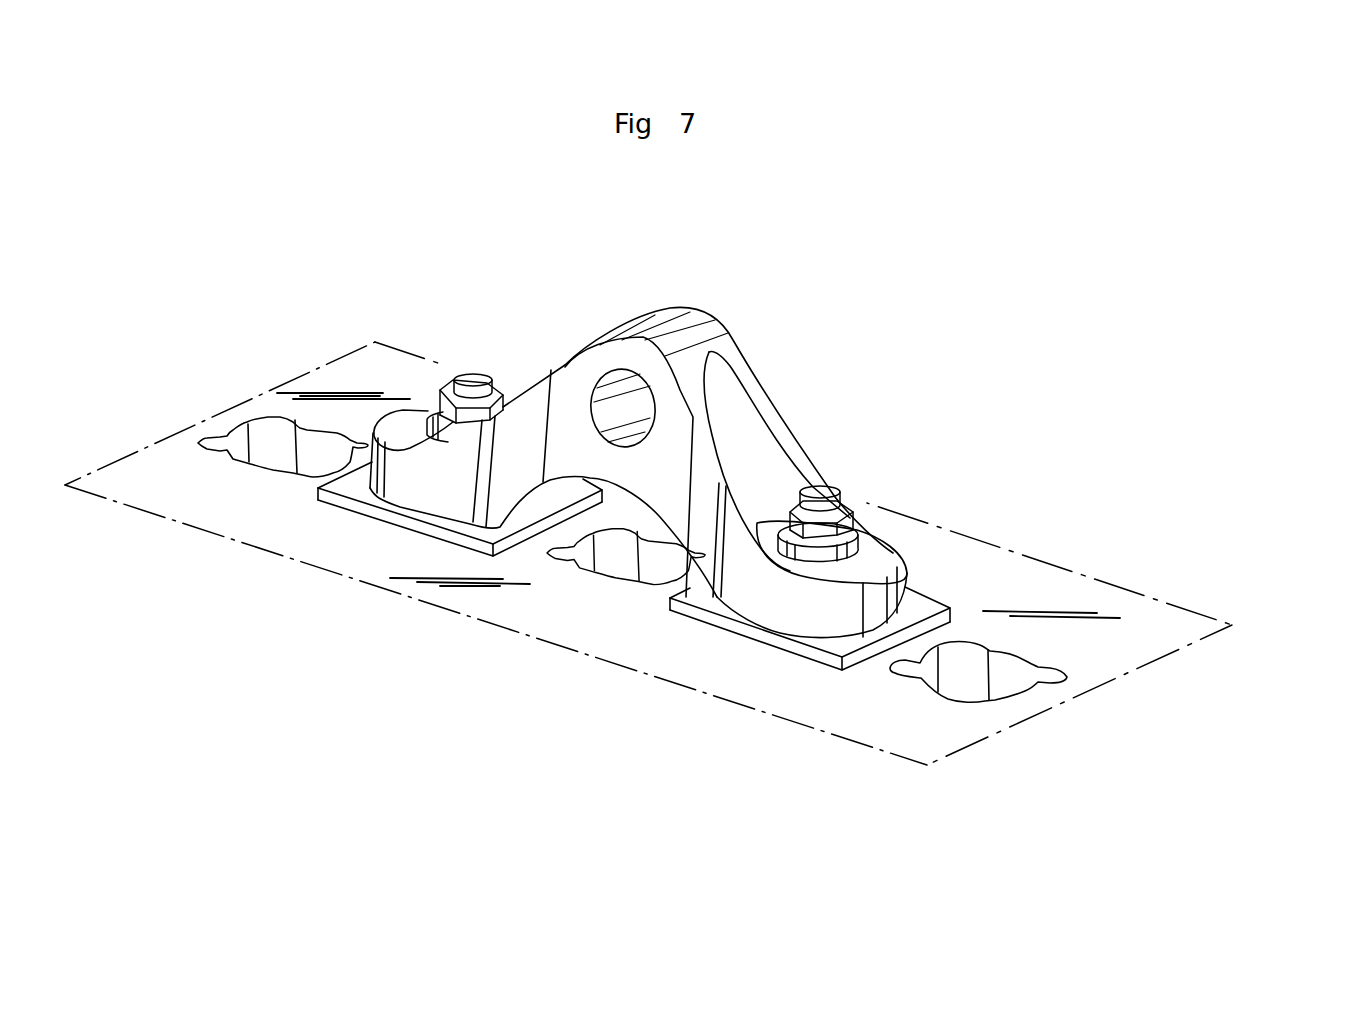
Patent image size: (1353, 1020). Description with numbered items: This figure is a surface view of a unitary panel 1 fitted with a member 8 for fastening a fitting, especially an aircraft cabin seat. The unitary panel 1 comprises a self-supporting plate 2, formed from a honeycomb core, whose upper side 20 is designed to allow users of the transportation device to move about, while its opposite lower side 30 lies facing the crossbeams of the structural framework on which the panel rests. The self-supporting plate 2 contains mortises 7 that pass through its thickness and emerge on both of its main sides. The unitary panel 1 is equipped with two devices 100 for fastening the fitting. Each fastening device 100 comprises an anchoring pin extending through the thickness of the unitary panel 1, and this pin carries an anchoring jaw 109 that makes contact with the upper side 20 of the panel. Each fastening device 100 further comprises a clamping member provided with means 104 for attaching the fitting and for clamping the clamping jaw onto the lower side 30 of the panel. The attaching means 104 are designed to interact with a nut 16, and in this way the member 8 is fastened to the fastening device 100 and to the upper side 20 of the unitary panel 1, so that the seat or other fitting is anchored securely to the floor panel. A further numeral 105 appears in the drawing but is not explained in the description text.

The unitary panel 1 is at (324, 384).
The self-supporting plate 2 is at (1178, 647).
The mortises 7 is at (273, 440).
The member for fastening a fitting 8 is at (700, 325).
The nut 16 is at (853, 507).
The upper side 20 is at (397, 372).
The lower side 30 is at (378, 627).
The device for fastening a fitting 100 is at (674, 581).
The means for attaching the fitting 104 is at (861, 472).
The bolt 105 is at (475, 375).
The anchoring jaw 109 is at (922, 605).